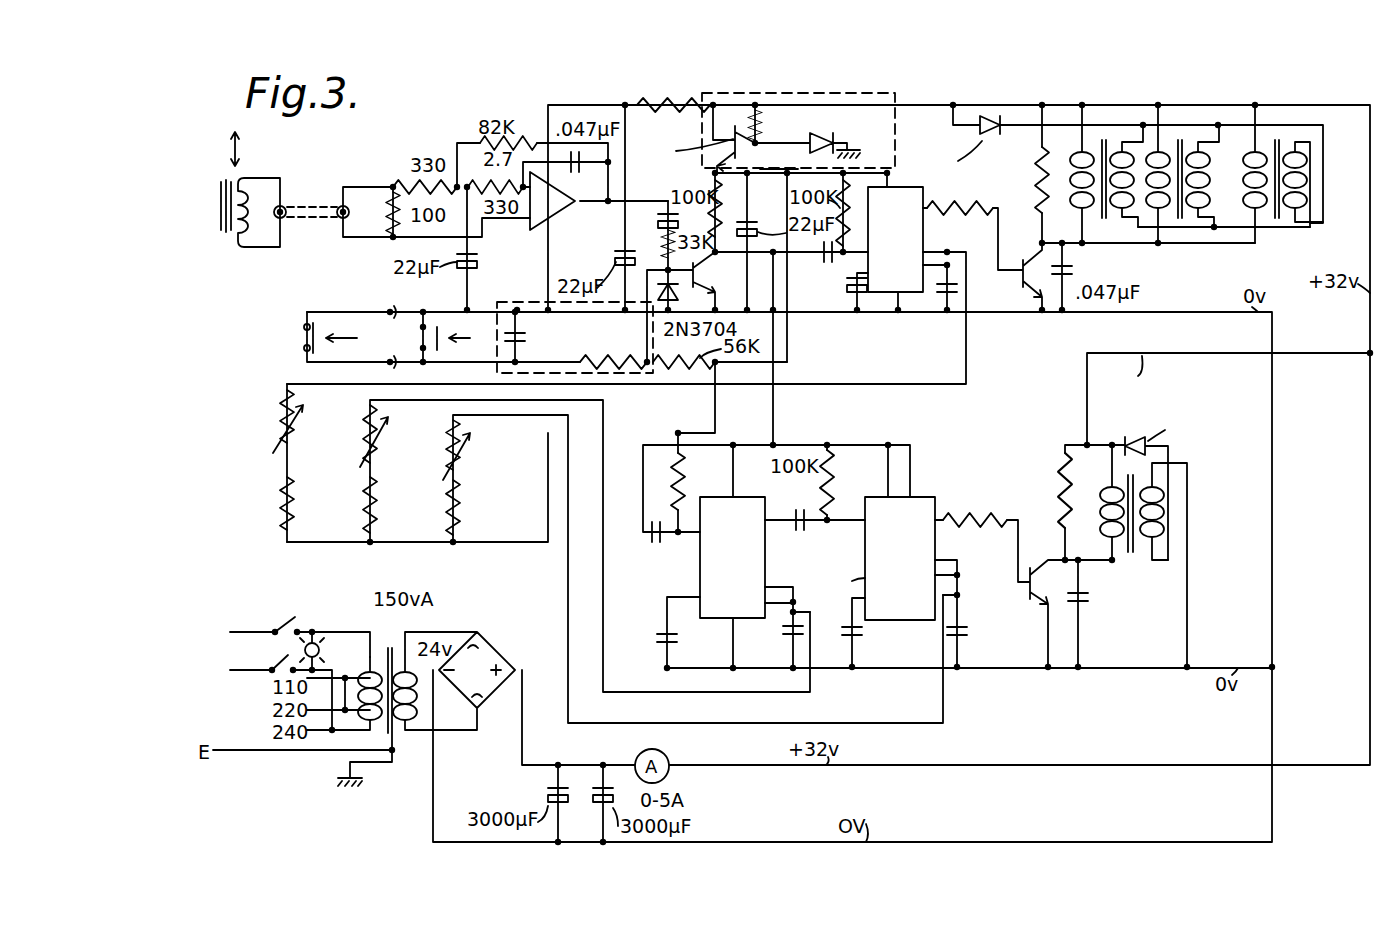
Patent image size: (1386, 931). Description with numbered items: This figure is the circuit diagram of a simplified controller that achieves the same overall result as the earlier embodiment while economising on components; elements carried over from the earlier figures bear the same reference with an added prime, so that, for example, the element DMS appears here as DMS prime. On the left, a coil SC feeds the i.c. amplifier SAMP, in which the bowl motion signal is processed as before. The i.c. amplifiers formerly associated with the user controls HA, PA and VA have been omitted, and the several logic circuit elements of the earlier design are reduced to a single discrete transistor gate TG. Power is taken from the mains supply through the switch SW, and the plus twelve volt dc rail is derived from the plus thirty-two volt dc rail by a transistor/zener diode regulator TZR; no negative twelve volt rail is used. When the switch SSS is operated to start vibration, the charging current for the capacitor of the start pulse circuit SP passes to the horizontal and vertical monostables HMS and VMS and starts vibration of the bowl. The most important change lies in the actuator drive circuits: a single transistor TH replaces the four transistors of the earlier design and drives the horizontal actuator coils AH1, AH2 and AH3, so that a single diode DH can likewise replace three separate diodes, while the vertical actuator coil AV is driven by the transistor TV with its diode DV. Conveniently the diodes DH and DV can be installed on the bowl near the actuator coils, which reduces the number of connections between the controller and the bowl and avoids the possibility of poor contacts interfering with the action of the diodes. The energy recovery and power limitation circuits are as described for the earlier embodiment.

The search coil SC is at (221, 186).
The i.c. amplifier SAMP is at (529, 229).
The transistor/zener diode regulator TZR is at (894, 142).
The diode DH is at (1111, 164).
The horizontal monostable (555) HMS is at (905, 244).
The transistor TH is at (1116, 223).
The horizontal aerial coil 1 AH1 is at (1104, 231).
The horizontal aerial coil 2 AH2 is at (1182, 231).
The horizontal aerial coil 3 AH3 is at (1264, 231).
The start pulse circuit SP is at (604, 308).
The switch SSS is at (420, 318).
The discrete transistor gate TG is at (705, 281).
The horizontal amplitude potentiometer HA is at (278, 442).
The pulse adjust potentiometer PA is at (372, 440).
The vertical amplitude potentiometer VA is at (450, 442).
The circuit element carried over from earlier embodiment DMS is at (761, 550).
The vertical monostable (556) VMS is at (916, 582).
The vertical drive transistor TV is at (1046, 556).
The diode DV is at (1228, 456).
The vertical aerial transformer AV is at (1143, 556).
The mains switch SW is at (286, 659).